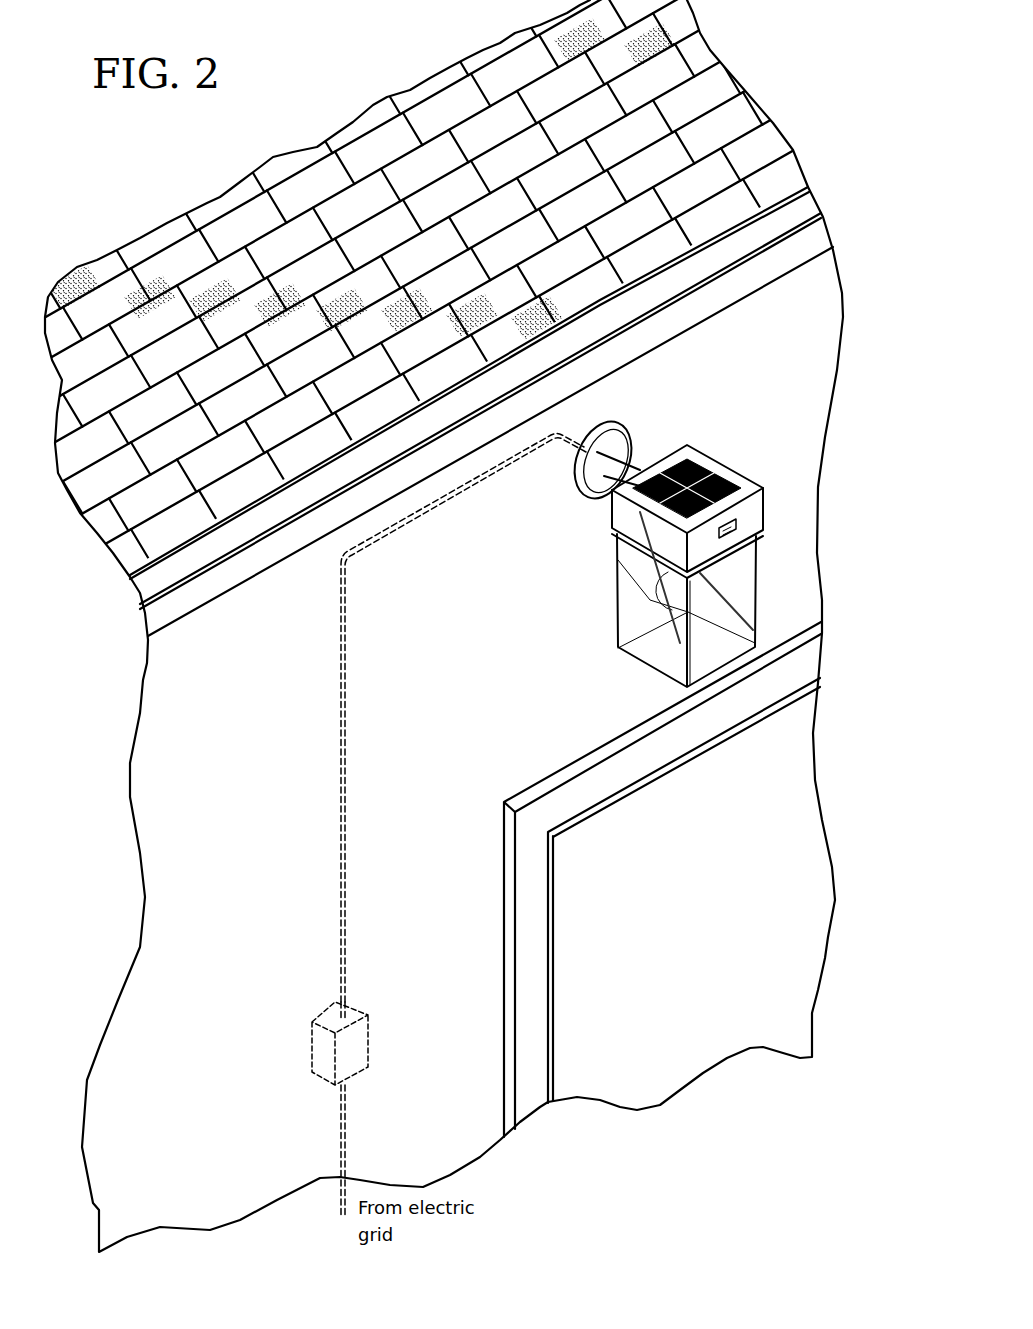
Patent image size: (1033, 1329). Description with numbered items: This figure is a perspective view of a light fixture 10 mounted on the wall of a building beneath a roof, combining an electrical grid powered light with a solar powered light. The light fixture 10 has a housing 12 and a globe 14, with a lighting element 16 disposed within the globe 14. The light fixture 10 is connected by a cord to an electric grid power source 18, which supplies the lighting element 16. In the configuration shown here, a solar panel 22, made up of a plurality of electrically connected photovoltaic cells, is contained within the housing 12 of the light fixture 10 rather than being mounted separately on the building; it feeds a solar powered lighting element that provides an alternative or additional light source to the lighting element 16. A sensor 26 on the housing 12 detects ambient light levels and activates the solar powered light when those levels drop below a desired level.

The light fixture 10 is at (687, 508).
The housing 12 is at (623, 512).
The globe 14 is at (647, 647).
The lighting element 16 is at (650, 603).
The electric grid power source 18 is at (341, 970).
The solar panel 22 is at (720, 485).
The sensor 26 is at (737, 522).